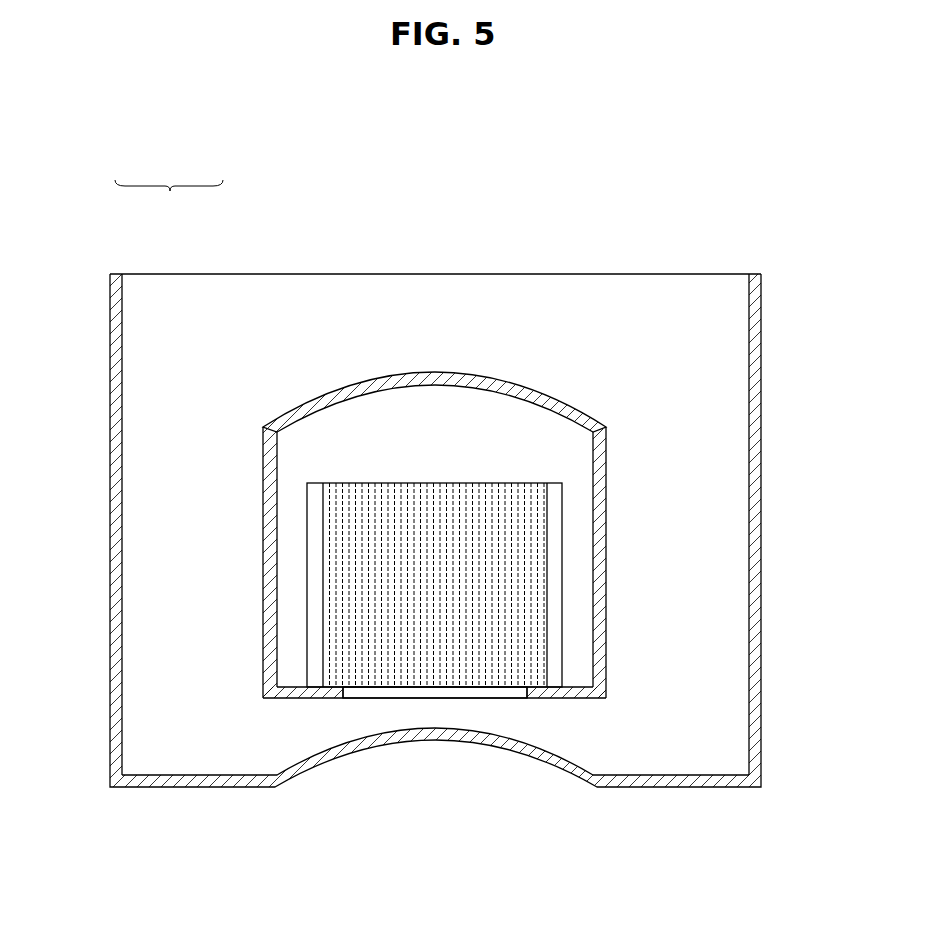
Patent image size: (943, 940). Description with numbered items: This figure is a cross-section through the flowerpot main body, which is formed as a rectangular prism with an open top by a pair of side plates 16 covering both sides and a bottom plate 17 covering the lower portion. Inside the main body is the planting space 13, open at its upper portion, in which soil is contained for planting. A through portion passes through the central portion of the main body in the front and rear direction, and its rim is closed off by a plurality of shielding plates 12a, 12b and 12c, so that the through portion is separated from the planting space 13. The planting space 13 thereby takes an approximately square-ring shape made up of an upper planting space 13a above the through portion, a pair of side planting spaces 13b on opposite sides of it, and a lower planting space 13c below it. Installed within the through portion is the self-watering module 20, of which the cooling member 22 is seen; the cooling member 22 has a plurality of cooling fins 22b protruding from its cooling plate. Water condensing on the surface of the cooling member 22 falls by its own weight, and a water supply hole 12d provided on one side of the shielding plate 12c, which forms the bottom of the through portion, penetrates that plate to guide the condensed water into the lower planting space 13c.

The shielding plate 12a is at (512, 383).
The shielding plate 12b is at (263, 553).
The shielding plate 12c is at (560, 700).
The water supply hole 12d is at (480, 700).
The planting space 13 is at (168, 183).
The upper planting space 13a is at (446, 327).
The side planting space 13b is at (216, 514).
The lower planting space 13c is at (286, 748).
The side plate 16 is at (110, 430).
The bottom plate 17 is at (183, 788).
The self-watering module 20 is at (356, 478).
The cooling member 22 is at (373, 585).
The cooling fin 22b is at (377, 633).